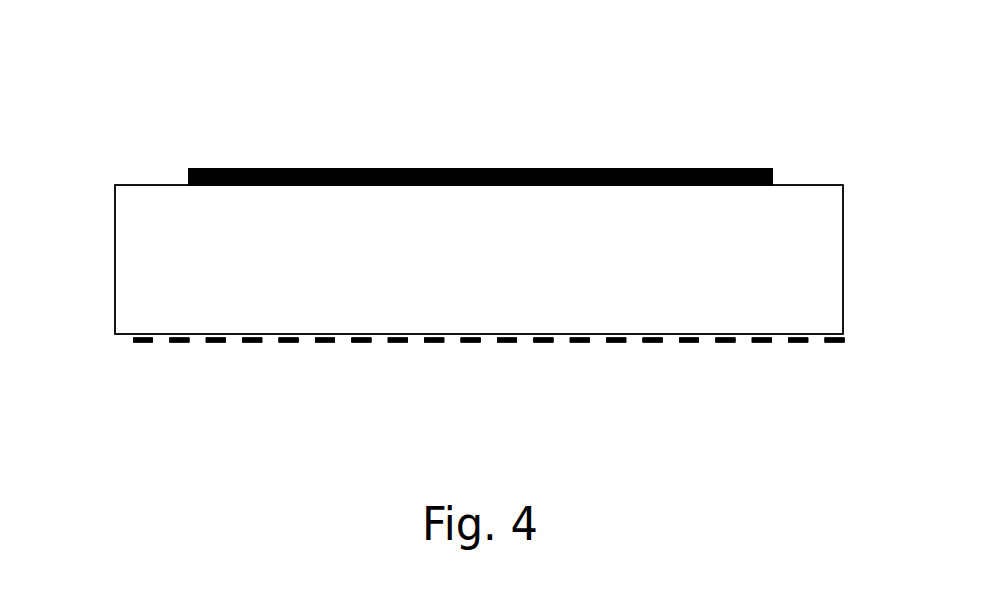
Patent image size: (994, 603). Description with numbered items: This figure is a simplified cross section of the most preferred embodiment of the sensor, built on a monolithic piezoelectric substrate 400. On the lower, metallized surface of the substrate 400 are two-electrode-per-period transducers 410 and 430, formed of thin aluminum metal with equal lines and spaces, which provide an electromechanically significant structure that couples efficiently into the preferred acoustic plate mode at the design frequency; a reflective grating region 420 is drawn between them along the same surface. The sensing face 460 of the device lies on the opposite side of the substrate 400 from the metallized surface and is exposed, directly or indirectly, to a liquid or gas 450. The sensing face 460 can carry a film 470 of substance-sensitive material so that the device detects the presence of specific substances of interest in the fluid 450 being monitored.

The monolithic piezoelectric substrate 400 is at (115, 183).
The 2-electrode-per-period transducer 410 is at (197, 347).
The dashed bottom layer segment 420 is at (500, 370).
The 2-electrode-per-period transducer 430 is at (772, 357).
The liquid or gas 450 is at (572, 152).
The sensing face 460 is at (801, 178).
The top electrode layer 470 is at (335, 168).